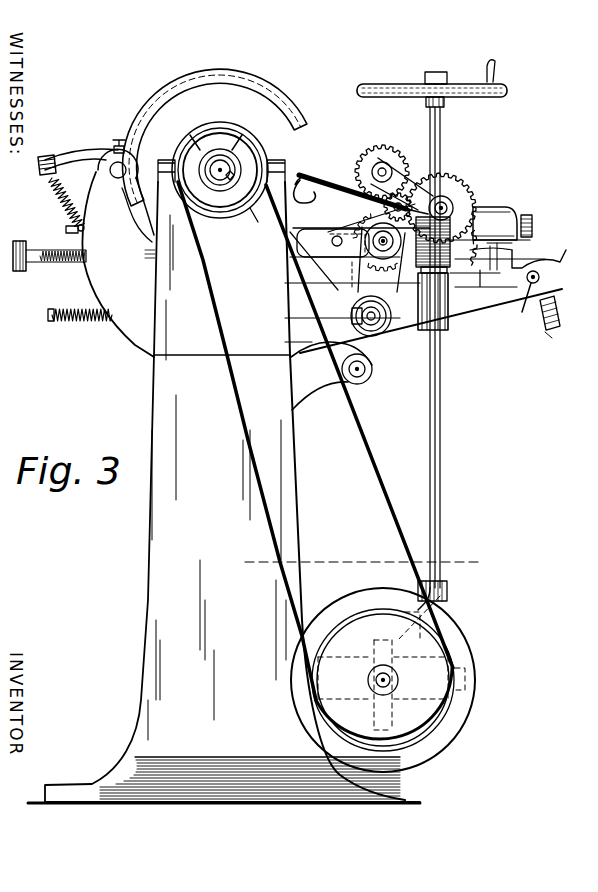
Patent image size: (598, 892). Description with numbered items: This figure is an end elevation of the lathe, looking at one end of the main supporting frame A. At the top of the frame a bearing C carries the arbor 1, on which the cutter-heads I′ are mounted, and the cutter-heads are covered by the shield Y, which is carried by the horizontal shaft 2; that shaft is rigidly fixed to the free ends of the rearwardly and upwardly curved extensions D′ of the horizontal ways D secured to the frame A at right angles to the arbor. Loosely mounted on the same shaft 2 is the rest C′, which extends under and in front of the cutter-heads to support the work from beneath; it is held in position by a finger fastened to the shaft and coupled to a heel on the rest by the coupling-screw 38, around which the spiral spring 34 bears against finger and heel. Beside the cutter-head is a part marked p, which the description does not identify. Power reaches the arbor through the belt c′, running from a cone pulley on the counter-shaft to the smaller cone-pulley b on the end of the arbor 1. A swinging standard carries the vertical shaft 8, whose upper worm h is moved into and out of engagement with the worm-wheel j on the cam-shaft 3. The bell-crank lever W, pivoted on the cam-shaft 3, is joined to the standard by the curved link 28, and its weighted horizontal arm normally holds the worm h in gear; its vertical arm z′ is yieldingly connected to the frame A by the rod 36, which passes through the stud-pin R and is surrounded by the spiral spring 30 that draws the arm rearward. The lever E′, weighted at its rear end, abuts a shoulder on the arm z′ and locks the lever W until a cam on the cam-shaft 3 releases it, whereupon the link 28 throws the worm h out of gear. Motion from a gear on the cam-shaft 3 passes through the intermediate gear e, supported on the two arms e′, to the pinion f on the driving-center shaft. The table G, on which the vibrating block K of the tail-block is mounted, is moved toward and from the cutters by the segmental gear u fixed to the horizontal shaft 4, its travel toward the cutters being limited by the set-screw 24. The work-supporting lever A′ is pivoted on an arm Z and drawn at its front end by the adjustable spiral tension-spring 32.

The main supporting frame A is at (224, 481).
The shield Y is at (184, 78).
The cutter-heads I′ is at (245, 112).
The arbor 1 is at (220, 172).
The pulley hub p is at (258, 222).
The belt c′ is at (372, 462).
The bearings C is at (446, 728).
The lever E′ is at (442, 428).
The table G is at (467, 300).
The vertical shaft 8 is at (450, 586).
The stud-pin R is at (363, 565).
The pinion f is at (378, 148).
The intermediate gear e is at (457, 192).
The arms e′ is at (431, 202).
The worm-wheel j is at (383, 208).
The curved link 28 is at (345, 232).
The levers A′ is at (330, 178).
The rest C′ is at (303, 179).
The bell-crank lever W is at (357, 272).
The cam-shaft 3 is at (377, 249).
The vertical arm z′ is at (371, 309).
The rod 36 is at (298, 331).
The segmental gear u is at (376, 352).
The horizontal shaft 4 is at (360, 371).
The horizontal ways D is at (452, 308).
The worm h is at (462, 244).
The vibrating block K is at (497, 207).
The cone-pulley b is at (525, 302).
The spiral tension-springs 32 is at (560, 300).
The arms Z is at (544, 343).
The coupling-screw 38 is at (45, 150).
The horizontal shaft 2 is at (114, 179).
The spiral spring 34 is at (58, 203).
The set-screw 24 is at (49, 262).
The curved extensions D′ is at (88, 296).
The spiral spring 30 is at (80, 326).